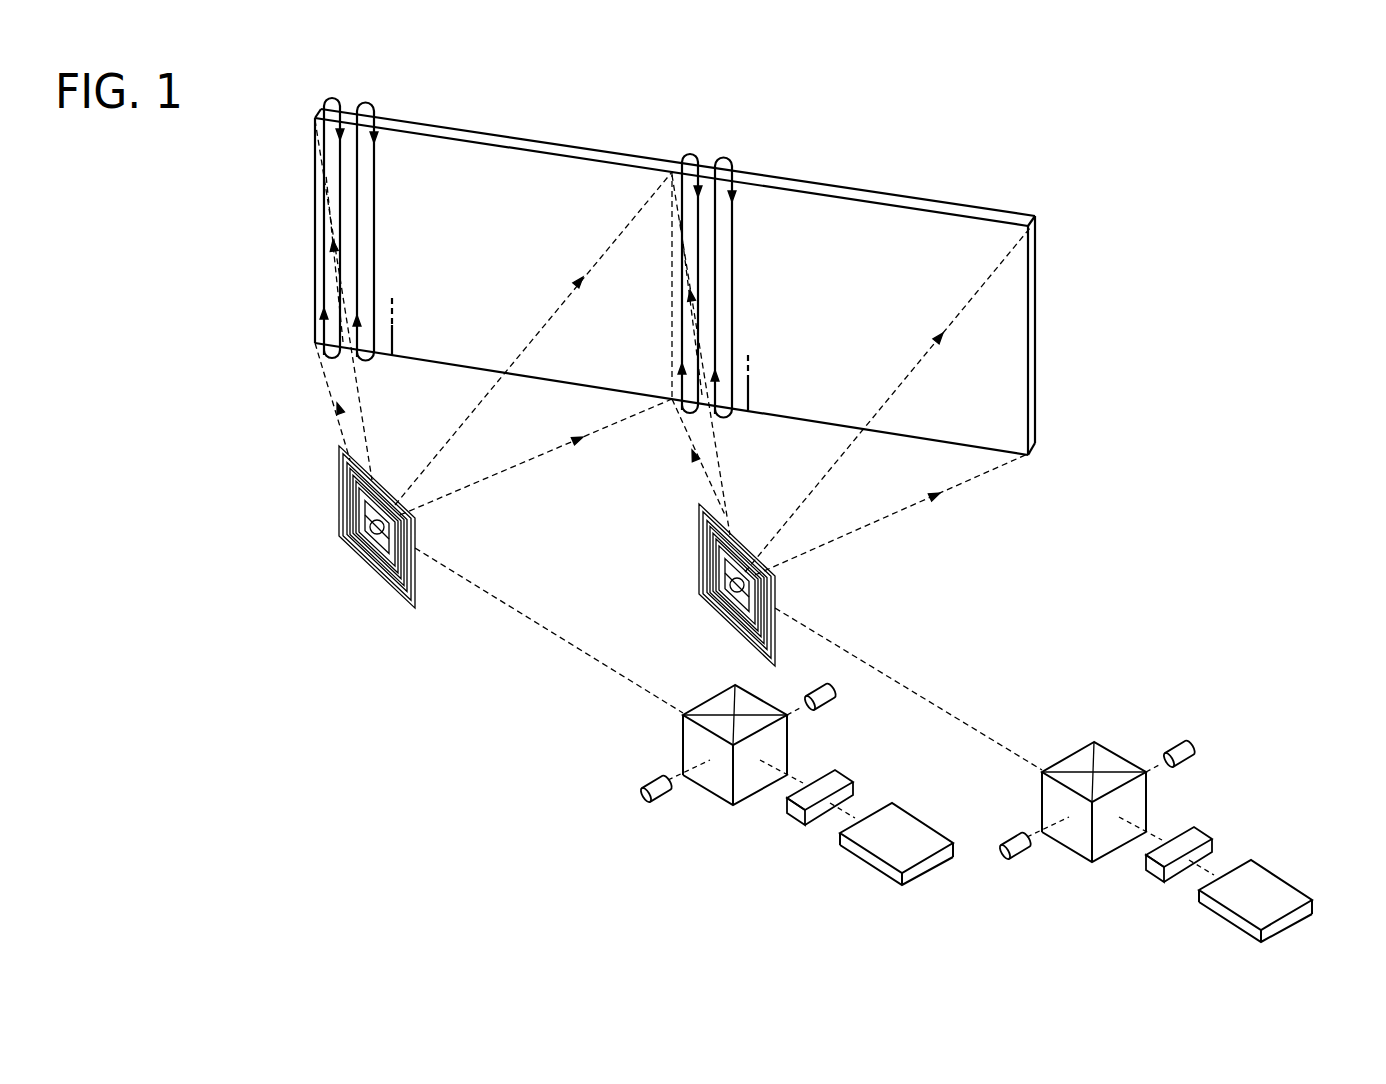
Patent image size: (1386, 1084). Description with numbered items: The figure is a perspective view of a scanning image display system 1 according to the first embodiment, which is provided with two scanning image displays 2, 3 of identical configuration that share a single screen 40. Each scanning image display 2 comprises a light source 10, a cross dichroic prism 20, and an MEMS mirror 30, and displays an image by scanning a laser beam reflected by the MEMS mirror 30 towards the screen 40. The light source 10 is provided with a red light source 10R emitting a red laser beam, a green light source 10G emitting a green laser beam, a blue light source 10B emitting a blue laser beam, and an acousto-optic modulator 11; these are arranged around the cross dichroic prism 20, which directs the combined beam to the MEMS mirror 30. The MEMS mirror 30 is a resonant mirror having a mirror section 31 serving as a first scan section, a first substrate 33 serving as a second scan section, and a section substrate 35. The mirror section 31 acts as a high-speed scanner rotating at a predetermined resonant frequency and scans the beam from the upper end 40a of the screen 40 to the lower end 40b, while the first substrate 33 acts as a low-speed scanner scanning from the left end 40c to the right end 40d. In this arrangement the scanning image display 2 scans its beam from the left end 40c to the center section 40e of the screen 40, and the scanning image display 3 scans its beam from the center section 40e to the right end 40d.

The scanning image display system 1 is at (1142, 140).
The scanning image display 2 is at (551, 712).
The scanning image display 3 is at (995, 666).
The light source 10 is at (983, 816).
The red light source 10R is at (662, 795).
The green light source 10G is at (930, 863).
The blue light source 10B is at (833, 695).
The acousto-optic modulator 11 is at (793, 810).
The cross dichroic prism 20 is at (692, 748).
The MEMS mirror 30 is at (501, 562).
The mirror section 31 is at (363, 528).
The first substrate 33 is at (357, 553).
The section substrate 35 is at (398, 590).
The screen 40 is at (792, 510).
The upper end 40a is at (537, 140).
The lower end 40b is at (540, 380).
The left end 40c is at (313, 232).
The right end 40d is at (1033, 391).
The center section 40e is at (670, 228).